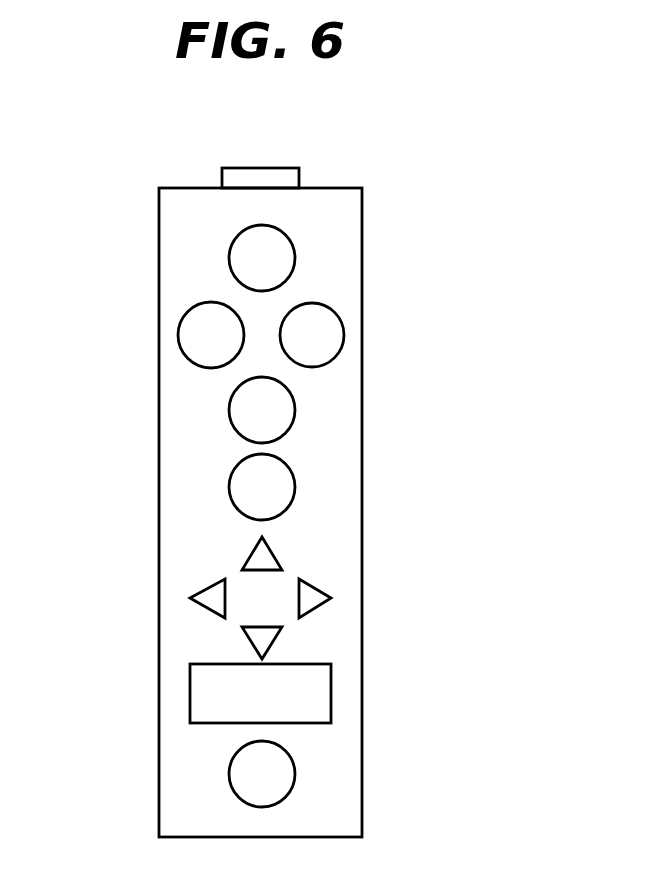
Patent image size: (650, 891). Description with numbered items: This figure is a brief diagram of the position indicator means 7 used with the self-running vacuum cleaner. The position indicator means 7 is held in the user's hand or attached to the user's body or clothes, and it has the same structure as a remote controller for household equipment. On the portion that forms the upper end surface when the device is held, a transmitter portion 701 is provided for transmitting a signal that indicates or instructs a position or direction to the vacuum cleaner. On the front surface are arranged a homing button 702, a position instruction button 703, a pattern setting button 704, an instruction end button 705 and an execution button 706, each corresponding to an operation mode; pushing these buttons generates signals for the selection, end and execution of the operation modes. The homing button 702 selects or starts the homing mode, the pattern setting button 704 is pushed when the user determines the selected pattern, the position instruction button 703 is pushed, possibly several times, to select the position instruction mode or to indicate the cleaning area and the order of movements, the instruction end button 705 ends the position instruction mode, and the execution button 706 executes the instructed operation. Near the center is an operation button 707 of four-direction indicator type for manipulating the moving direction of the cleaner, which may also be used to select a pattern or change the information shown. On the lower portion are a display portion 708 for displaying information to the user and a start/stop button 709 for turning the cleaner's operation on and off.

The position indicator means 7 is at (177, 187).
The transmitter portion 701 is at (300, 172).
The homing button 702 is at (295, 258).
The position instruction button 703 is at (344, 335).
The pattern setting button 704 is at (178, 335).
The instruction end button 705 is at (295, 410).
The execution button 706 is at (295, 487).
The operation button 707 is at (325, 592).
The display portion 708 is at (331, 698).
The start/stop button 709 is at (295, 774).